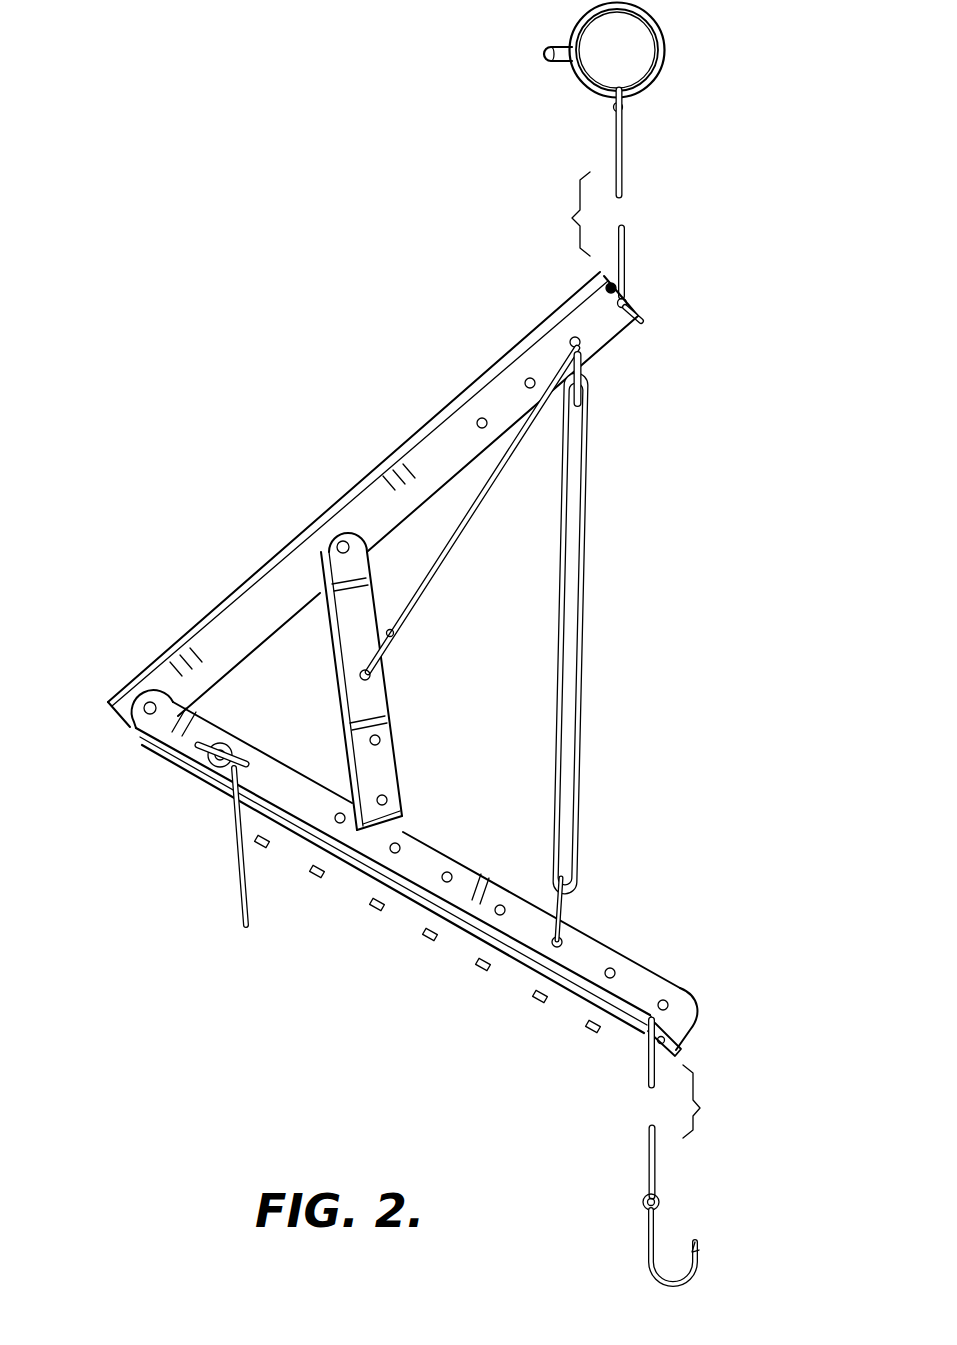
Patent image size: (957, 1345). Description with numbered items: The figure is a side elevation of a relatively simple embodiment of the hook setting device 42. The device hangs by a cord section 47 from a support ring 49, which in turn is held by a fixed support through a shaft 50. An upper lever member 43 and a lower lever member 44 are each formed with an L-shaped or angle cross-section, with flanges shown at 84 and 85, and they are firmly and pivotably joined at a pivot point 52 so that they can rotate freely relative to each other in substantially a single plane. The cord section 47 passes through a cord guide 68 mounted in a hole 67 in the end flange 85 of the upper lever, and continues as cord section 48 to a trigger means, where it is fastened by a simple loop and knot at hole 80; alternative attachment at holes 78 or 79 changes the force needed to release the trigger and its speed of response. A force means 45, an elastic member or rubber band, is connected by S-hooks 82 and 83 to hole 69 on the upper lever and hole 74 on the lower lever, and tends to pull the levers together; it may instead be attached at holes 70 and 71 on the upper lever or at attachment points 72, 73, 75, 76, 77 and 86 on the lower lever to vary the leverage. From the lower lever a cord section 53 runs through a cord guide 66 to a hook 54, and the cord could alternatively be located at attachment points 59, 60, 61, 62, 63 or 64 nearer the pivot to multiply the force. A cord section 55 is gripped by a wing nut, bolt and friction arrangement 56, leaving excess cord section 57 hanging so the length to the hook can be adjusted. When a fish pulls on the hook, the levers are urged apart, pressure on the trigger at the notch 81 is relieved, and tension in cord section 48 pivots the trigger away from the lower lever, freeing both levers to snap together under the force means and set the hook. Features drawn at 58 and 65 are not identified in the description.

The hook setting device 42 is at (406, 689).
The upper lever member 43 is at (220, 668).
The lower lever member 44 is at (213, 728).
The force means 45 is at (590, 543).
The cord section 47 is at (623, 172).
The cord section 48 is at (458, 572).
The support ring 49 is at (648, 90).
The shaft 50 is at (557, 67).
The pivot point 52 is at (144, 708).
The cord section 53 is at (657, 1153).
The hook 54 is at (647, 1237).
The cord section 55 is at (297, 832).
The wing nut, bolt and friction arrangement 56 is at (207, 758).
The cord section 57 is at (236, 887).
The pin 58 is at (645, 1040).
The attachment point 59 is at (590, 1002).
The attachment point 60 is at (540, 977).
The attachment point 61 is at (480, 940).
The attachment point 62 is at (430, 905).
The attachment point 63 is at (378, 873).
The attachment point 64 is at (316, 850).
The flange 65 is at (220, 790).
The cord guide 66 is at (688, 1030).
The hole 67 is at (621, 332).
The cord guide 68 is at (628, 300).
The hole 69 is at (569, 340).
The hole 70 is at (524, 383).
The hole 71 is at (476, 423).
The attachment point 72 is at (669, 1004).
The attachment point 73 is at (616, 972).
The hole 74 is at (563, 942).
The attachment point 75 is at (501, 905).
The attachment point 76 is at (452, 875).
The attachment point 77 is at (400, 846).
The hole 78 is at (389, 798).
The hole 79 is at (382, 740).
The hole 80 is at (372, 673).
The notch 81 is at (348, 857).
The S-hook 82 is at (584, 393).
The S-hook 83 is at (565, 898).
The flange 84 is at (203, 618).
The end flange 85 is at (638, 313).
The attachment point 86 is at (340, 812).